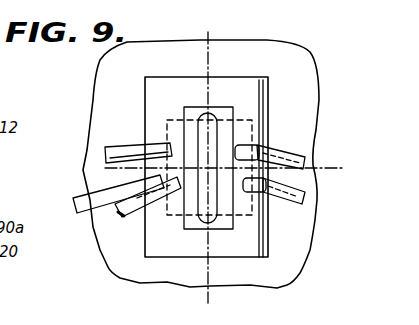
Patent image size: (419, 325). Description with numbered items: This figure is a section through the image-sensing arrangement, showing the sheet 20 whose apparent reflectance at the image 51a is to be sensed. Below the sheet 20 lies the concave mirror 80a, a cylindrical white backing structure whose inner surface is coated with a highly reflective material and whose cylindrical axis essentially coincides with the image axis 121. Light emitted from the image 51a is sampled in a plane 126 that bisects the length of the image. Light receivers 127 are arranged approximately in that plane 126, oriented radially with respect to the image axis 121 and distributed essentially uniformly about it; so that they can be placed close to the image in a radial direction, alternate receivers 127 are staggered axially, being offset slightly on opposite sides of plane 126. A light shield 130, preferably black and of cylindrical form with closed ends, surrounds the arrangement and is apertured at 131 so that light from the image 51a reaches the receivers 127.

The sheet 20 is at (297, 257).
The image axis 121 is at (208, 64).
The plane bisecting the image length 126 is at (321, 165).
The light receivers 127 is at (170, 143).
The light shield 130 is at (261, 238).
The aperture 131 is at (235, 133).
The image 51a is at (200, 222).
The concave mirror 80a is at (174, 218).